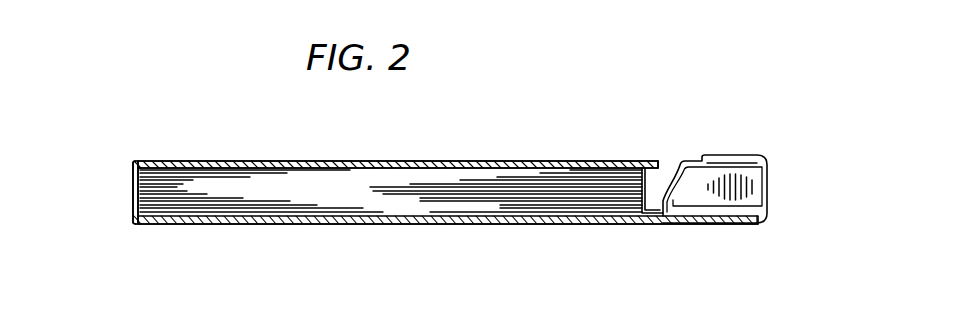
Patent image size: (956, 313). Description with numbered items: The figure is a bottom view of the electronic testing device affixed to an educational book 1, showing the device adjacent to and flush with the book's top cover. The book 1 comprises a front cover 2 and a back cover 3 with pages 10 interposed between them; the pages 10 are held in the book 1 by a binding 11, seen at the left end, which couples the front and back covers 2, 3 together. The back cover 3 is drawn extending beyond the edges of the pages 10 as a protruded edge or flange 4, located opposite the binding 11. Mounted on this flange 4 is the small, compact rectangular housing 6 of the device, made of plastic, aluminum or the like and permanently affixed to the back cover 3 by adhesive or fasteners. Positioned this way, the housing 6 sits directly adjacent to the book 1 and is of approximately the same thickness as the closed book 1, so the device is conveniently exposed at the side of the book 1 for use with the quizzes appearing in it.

The educational book 1 is at (393, 151).
The front cover 2 is at (297, 162).
The back cover 3 is at (371, 224).
The protruded edge or flange 4 is at (676, 217).
The rectangular housing 6 is at (753, 182).
The pages 10 is at (482, 193).
The binding 11 is at (132, 185).